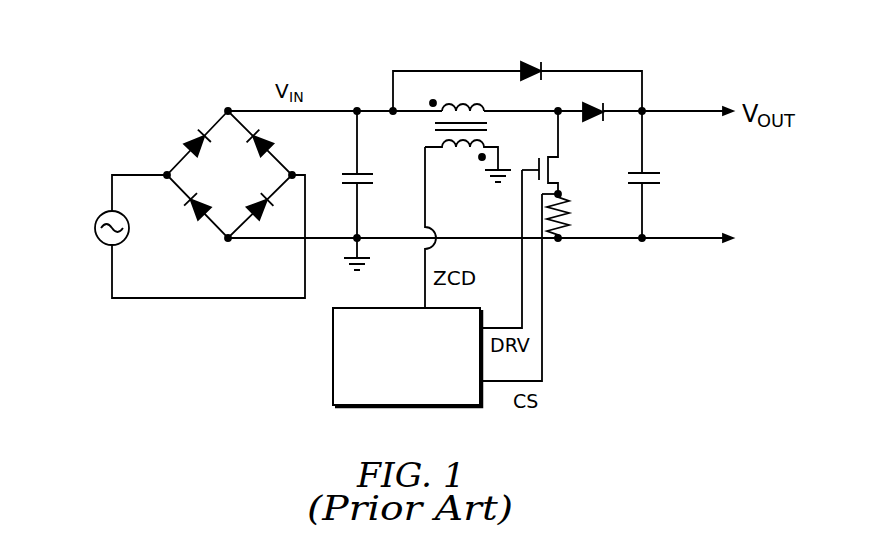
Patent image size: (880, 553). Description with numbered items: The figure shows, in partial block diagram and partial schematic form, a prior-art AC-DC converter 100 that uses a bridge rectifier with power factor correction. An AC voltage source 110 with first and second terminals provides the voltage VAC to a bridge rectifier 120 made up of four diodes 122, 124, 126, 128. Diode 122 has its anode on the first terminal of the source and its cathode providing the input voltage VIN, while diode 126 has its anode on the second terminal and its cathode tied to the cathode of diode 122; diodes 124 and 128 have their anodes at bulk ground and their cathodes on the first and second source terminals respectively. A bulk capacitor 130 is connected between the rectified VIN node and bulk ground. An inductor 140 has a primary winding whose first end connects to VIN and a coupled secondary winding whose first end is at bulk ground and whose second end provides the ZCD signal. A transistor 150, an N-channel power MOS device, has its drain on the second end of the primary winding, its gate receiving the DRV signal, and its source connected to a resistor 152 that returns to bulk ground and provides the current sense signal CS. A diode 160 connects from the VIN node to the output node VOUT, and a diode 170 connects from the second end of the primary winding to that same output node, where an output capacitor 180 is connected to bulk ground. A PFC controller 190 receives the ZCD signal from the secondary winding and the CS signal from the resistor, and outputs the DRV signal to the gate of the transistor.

The AC-DC converter 100 is at (148, 45).
The AC voltage source 110 is at (105, 242).
The bridge rectifier 120 is at (225, 153).
The diode 122 is at (192, 138).
The diode 124 is at (197, 210).
The diode 126 is at (270, 140).
The diode 128 is at (258, 204).
The bulk capacitor 130 is at (344, 186).
The inductor 140 is at (468, 103).
The transistor 150 is at (553, 156).
The resistor 152 is at (566, 226).
The diode 160 is at (543, 70).
The diode 170 is at (593, 120).
The output capacitor 180 is at (656, 173).
The power factor control (PFC) controller 190 is at (332, 372).